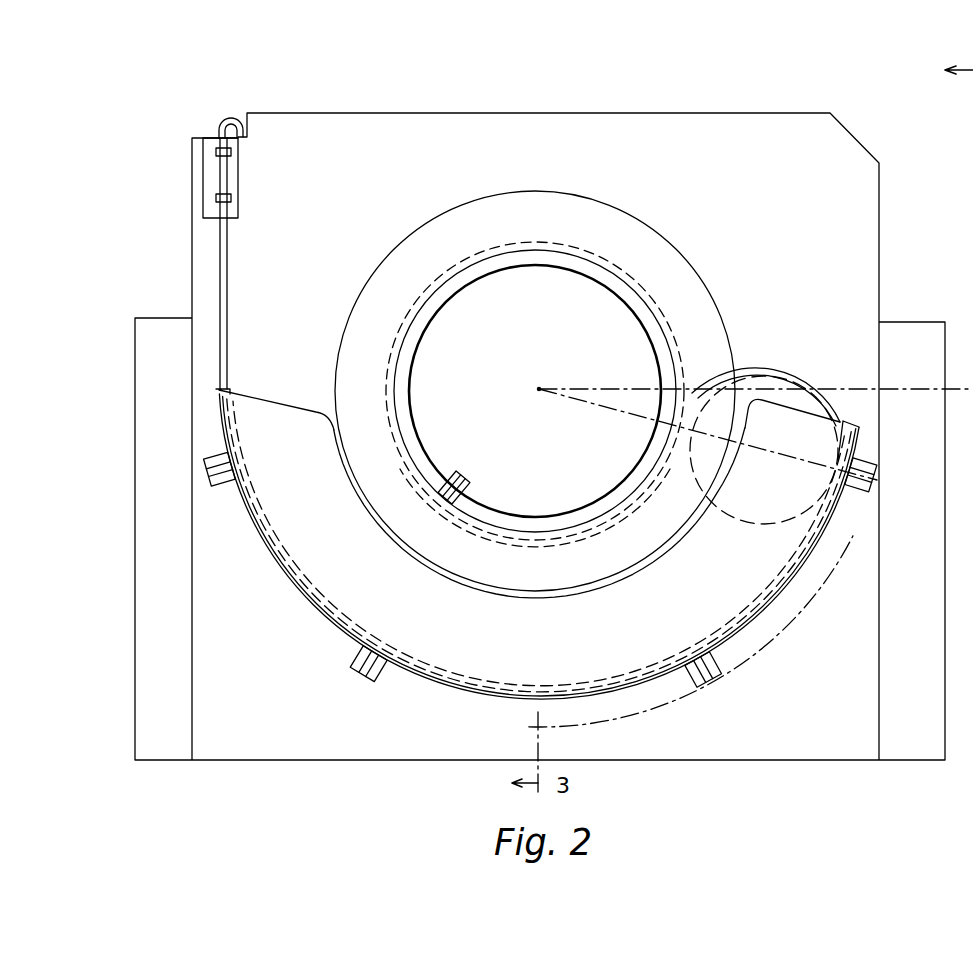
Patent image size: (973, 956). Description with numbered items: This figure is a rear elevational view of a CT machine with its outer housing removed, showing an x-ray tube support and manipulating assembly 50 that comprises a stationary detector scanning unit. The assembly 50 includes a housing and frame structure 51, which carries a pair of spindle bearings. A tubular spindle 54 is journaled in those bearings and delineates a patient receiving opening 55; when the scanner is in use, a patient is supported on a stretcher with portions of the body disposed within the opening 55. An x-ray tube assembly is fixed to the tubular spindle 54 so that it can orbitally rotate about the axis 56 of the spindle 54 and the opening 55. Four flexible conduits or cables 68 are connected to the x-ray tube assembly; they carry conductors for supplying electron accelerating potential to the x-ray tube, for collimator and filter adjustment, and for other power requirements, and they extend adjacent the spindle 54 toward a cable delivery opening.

The x-ray tube support and manipulating assembly 50 is at (708, 99).
The housing and frame structure 51 is at (867, 251).
The tubular spindle 54 is at (454, 288).
The patient receiving opening 55 is at (535, 391).
The axis 56 is at (539, 392).
The flexible conduits or cables 68 is at (230, 263).